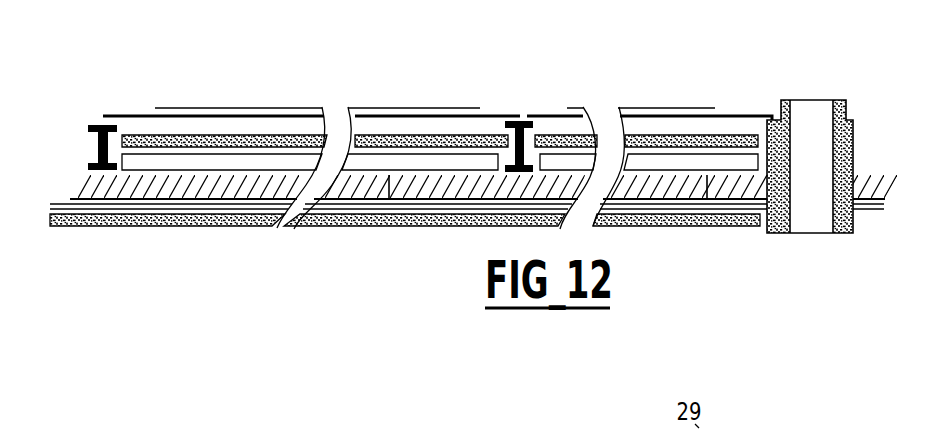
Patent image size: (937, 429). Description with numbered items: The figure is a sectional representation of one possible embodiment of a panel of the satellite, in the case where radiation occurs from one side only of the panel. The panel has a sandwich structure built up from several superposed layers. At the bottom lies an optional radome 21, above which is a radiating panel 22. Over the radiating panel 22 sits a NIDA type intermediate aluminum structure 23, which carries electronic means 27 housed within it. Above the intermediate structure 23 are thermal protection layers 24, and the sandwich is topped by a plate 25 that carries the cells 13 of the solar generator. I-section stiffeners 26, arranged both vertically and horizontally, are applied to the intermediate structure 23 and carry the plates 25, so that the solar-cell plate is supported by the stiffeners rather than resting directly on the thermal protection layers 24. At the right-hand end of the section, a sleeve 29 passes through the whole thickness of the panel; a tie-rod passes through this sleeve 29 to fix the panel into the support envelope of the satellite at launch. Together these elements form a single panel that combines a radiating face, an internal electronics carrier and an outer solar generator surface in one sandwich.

The cells of the solar generator 13 is at (642, 106).
The radome 21 is at (430, 229).
The radiating panel 22 is at (72, 216).
The intermediate aluminum structure 23 is at (78, 174).
The thermal protection layers 24 is at (219, 133).
The plate 25 is at (651, 122).
The I-section stiffeners 26 is at (97, 117).
The electronic means 27 is at (244, 160).
The sleeve 29 is at (815, 198).